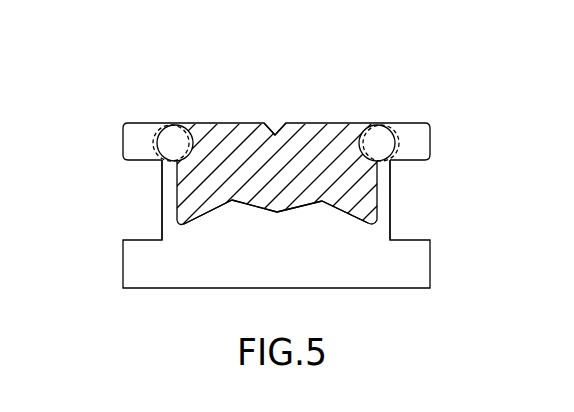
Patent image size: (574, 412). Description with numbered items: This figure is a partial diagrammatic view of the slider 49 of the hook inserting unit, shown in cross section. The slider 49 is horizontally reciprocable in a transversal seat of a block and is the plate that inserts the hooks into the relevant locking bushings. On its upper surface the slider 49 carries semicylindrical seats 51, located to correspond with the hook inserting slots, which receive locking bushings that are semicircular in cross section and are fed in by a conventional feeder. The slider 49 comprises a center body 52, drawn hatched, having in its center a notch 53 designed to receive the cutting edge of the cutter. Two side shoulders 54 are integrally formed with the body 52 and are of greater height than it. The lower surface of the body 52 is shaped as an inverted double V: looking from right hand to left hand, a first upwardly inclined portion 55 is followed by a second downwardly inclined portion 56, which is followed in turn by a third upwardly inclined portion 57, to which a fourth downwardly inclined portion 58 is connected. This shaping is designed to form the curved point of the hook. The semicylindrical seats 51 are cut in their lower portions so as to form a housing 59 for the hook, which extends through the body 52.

The slider 49 is at (409, 121).
The semicylindrical seats 51 is at (192, 141).
The center body 52 is at (233, 138).
The notch 53 is at (276, 128).
The side shoulders 54 is at (430, 268).
The first upwardly inclined portion 55 is at (351, 215).
The second downwardly inclined portion 56 is at (306, 208).
The third upwardly inclined portion 57 is at (251, 208).
The fourth downwardly inclined portion 58 is at (206, 220).
The housing 59 is at (162, 188).